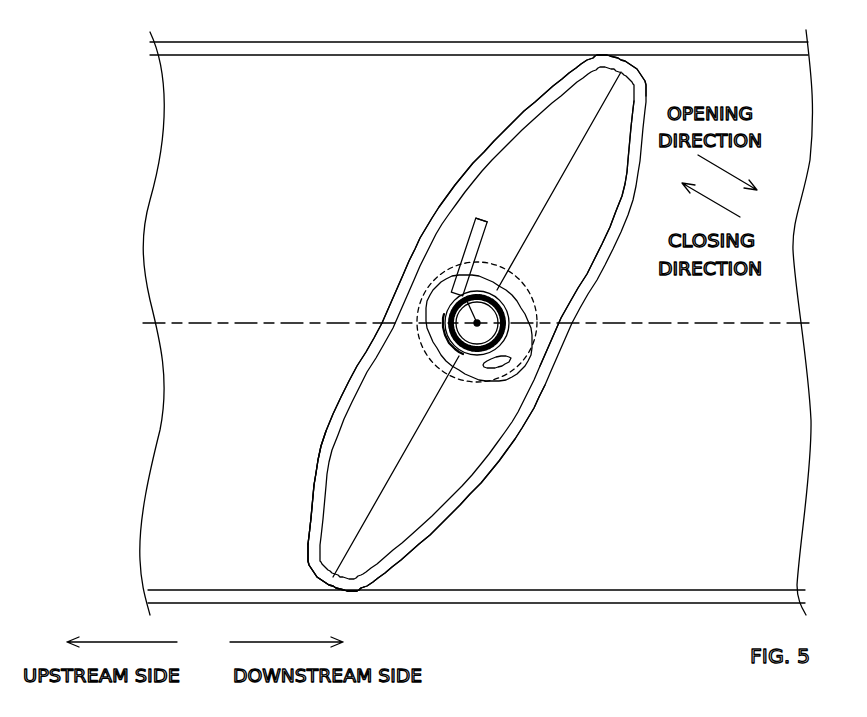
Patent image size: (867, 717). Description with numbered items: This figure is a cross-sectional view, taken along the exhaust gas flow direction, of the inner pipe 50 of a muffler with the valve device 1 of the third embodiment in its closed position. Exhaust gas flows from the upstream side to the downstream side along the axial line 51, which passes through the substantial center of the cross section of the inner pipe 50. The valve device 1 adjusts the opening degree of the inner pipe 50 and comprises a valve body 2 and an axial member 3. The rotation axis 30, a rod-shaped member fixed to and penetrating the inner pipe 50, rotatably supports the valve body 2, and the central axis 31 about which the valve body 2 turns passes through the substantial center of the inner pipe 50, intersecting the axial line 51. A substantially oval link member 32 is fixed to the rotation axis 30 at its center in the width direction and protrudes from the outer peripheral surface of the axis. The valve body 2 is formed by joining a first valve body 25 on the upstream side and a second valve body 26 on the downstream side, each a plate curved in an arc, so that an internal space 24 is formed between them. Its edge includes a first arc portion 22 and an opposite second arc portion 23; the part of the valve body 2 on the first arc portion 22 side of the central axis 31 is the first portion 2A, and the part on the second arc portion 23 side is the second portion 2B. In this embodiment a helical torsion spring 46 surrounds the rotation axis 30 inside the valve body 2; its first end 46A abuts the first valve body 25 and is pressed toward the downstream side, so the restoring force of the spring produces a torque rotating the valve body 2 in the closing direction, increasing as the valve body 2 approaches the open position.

The valve device 1 is at (642, 530).
The valve body 2 is at (558, 438).
The first portion 2A is at (468, 170).
The second portion 2B is at (343, 393).
The axial member 3 is at (541, 285).
The first arc portion 22 is at (632, 70).
The second arc portion 23 is at (322, 573).
The internal space 24 is at (575, 295).
The first valve body 25 is at (318, 462).
The second valve body 26 is at (490, 472).
The rotation axis 30 is at (426, 284).
The central axis 31 is at (450, 301).
The link member 32 is at (523, 360).
The helical torsion spring 46 is at (476, 292).
The first end 46A is at (482, 217).
The inner pipe 50 is at (534, 46).
The axial line 51 is at (705, 325).